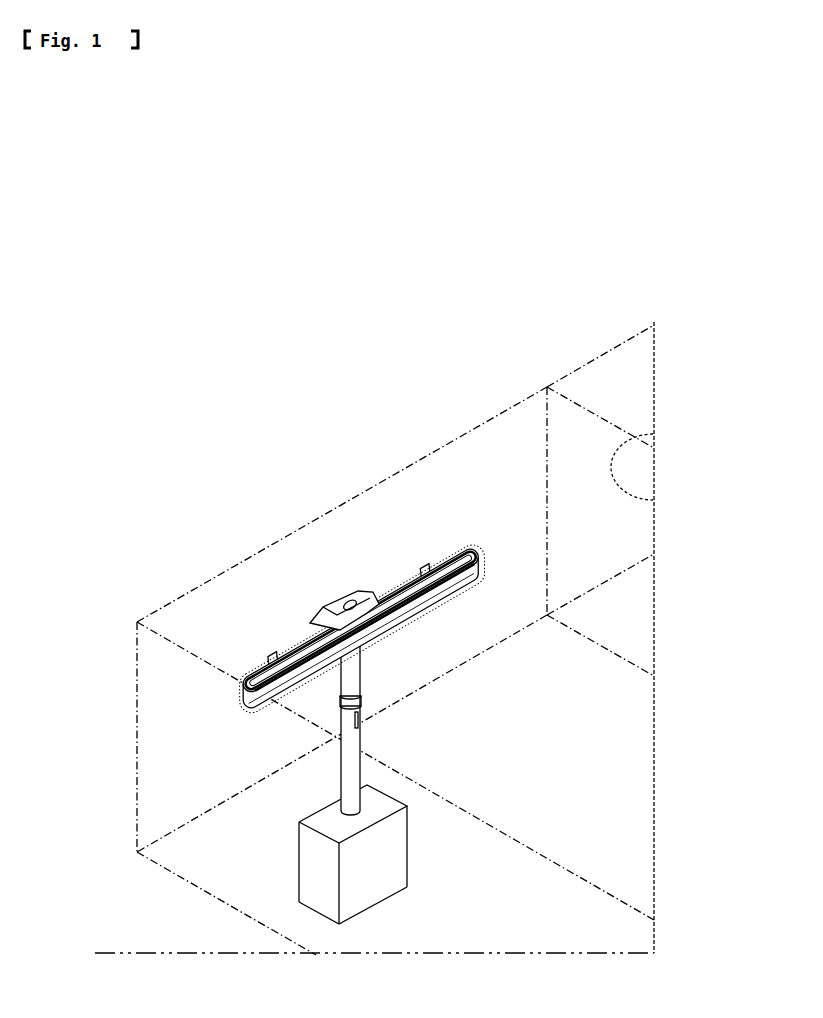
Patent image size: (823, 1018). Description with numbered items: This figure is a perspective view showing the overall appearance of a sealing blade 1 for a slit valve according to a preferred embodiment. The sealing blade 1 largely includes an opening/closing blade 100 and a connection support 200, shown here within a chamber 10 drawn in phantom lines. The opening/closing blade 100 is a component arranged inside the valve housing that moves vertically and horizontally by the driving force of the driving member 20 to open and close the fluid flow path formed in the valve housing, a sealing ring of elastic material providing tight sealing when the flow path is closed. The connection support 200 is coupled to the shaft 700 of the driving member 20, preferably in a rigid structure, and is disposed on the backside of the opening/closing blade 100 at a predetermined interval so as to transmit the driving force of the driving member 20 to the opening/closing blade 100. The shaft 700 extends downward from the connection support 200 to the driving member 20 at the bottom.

The sealing blade 1 is at (314, 609).
The chamber 10 is at (502, 462).
The driving member 20 is at (320, 857).
The opening/closing blade 100 is at (371, 628).
The connection support 200 is at (337, 607).
The shaft 700 is at (343, 747).